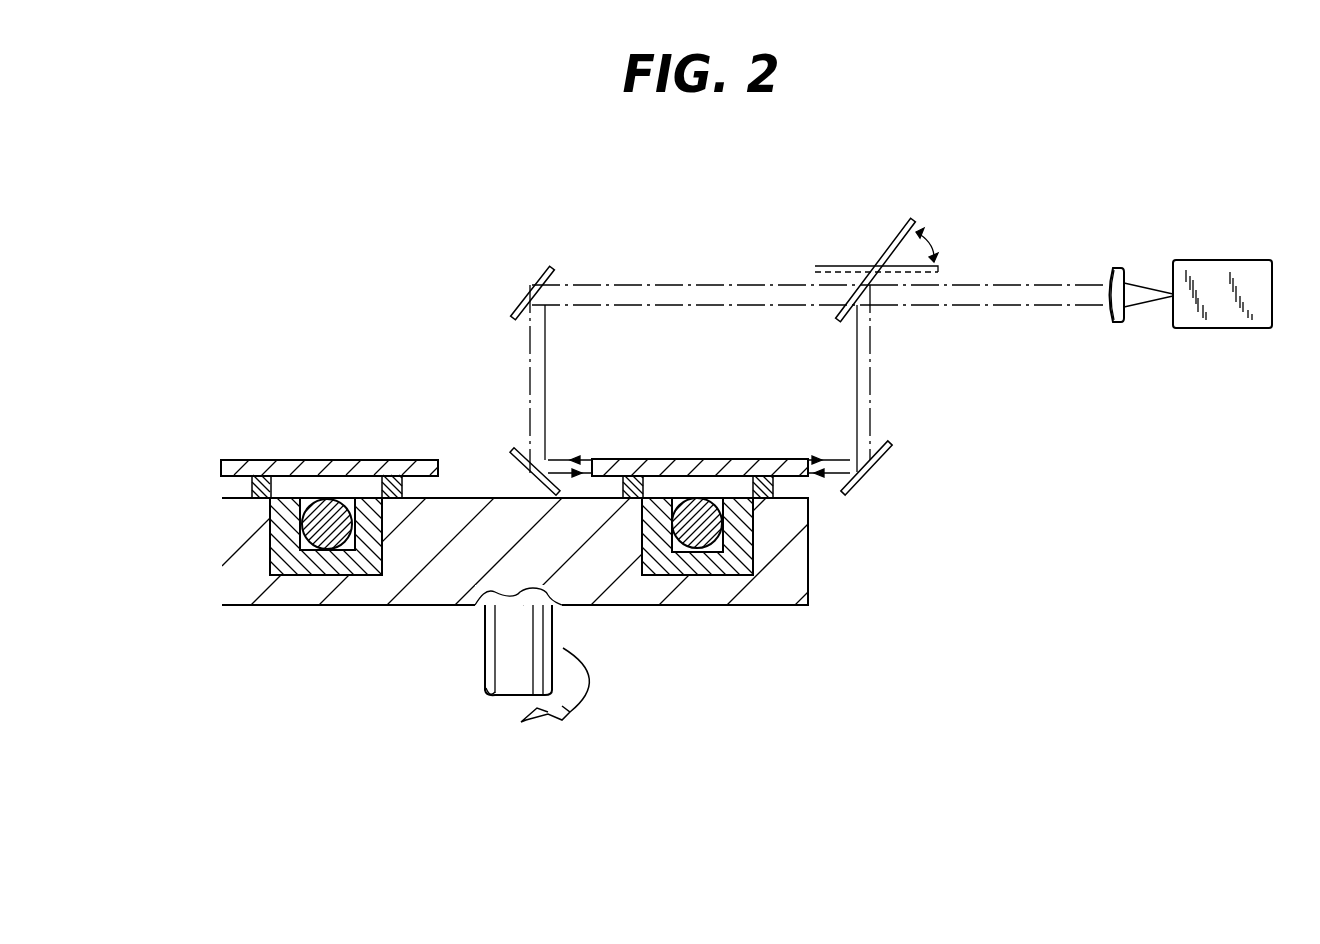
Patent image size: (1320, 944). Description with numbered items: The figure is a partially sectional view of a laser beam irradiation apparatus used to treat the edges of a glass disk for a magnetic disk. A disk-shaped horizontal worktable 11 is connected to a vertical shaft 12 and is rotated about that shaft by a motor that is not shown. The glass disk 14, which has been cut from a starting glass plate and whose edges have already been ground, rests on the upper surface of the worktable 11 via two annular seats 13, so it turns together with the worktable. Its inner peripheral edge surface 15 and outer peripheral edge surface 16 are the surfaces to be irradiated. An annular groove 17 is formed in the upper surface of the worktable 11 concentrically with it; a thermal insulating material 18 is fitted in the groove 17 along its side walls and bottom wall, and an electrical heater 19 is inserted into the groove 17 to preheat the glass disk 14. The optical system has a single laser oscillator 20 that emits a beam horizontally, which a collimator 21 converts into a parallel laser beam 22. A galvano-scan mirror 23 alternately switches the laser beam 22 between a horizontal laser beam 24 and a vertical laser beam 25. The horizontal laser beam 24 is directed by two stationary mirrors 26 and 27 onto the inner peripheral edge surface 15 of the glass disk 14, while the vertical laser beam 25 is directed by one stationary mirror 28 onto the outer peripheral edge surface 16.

The worktable 11 is at (808, 528).
The vertical shaft 12 is at (508, 657).
The annular seats 13 is at (250, 490).
The glass disk 14 is at (298, 461).
The inner peripheral edge surface 15 is at (586, 458).
The outer peripheral edge surface 16 is at (818, 458).
The annular groove 17 is at (718, 570).
The thermal insulating material 18 is at (740, 555).
The electrical heater 19 is at (688, 550).
The laser oscillator 20 is at (1237, 261).
The collimator 21 is at (1118, 267).
The parallel laser beam 22 is at (995, 293).
The galvano-scan mirror 23 is at (890, 238).
The horizontal laser beam 24 is at (668, 293).
The vertical laser beam 25 is at (865, 371).
The stationary mirror 26 is at (547, 265).
The stationary mirror 27 is at (517, 456).
The stationary mirror 28 is at (893, 462).